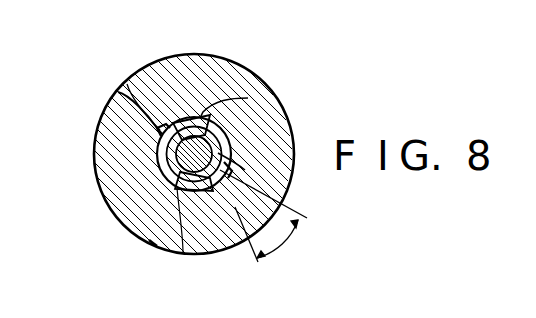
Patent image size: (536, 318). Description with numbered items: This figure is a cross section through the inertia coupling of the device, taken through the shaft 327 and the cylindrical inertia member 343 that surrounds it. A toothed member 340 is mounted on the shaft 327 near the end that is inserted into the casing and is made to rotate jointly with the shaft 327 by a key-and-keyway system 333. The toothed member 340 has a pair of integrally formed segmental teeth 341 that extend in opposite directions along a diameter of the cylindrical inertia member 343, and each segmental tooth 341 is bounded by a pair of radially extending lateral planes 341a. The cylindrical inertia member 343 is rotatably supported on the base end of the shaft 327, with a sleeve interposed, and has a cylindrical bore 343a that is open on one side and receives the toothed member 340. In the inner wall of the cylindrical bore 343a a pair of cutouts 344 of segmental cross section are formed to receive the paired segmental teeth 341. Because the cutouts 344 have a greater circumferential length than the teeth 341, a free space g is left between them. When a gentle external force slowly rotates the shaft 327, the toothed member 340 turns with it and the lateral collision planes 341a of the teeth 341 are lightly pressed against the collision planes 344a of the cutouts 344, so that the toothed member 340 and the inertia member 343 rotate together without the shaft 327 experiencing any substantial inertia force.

The shaft 327 is at (183, 157).
The key-and-keyway system 333 is at (157, 246).
The toothed member 340 is at (167, 162).
The segmental tooth 341 is at (190, 124).
The lateral plane 341a is at (177, 180).
The cylindrical inertia member 343 is at (242, 80).
The cylindrical bore 343a is at (245, 170).
The cutout 344 is at (127, 84).
The collision plane 344a is at (118, 92).
The free space g is at (263, 216).